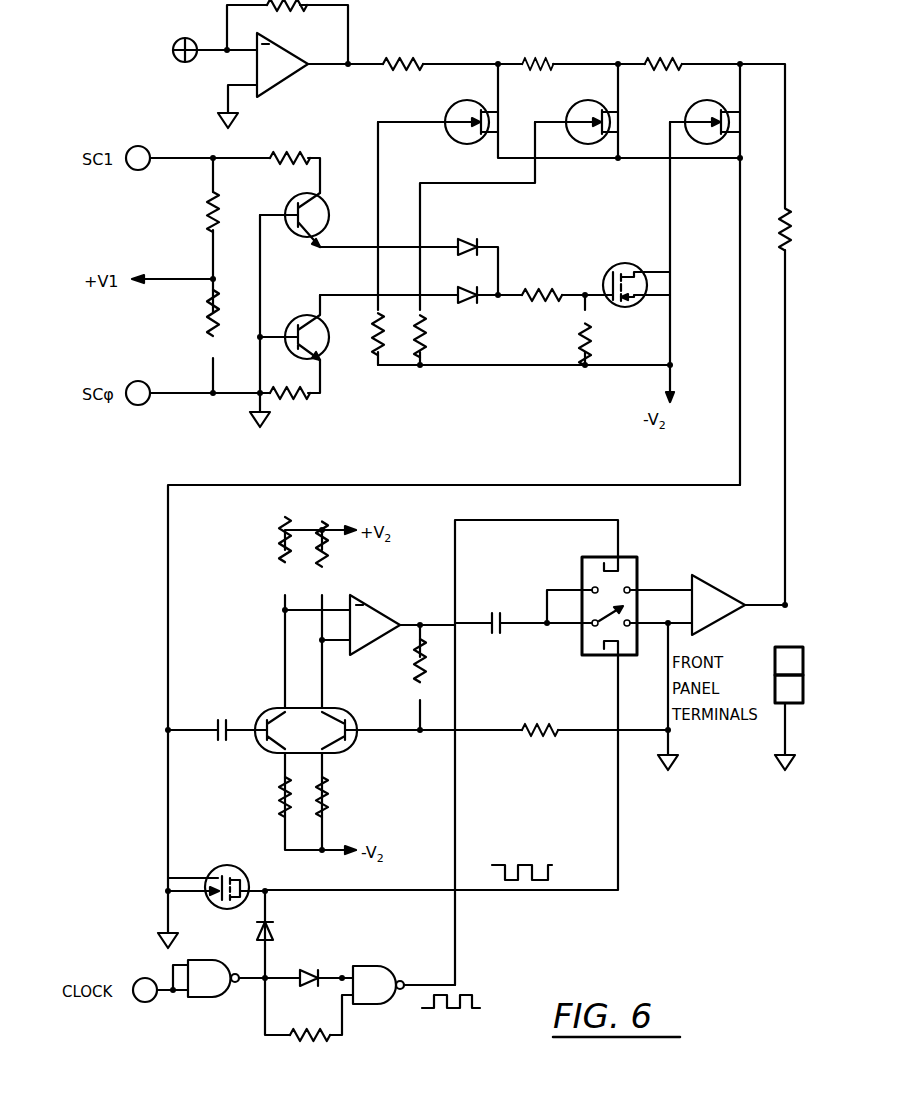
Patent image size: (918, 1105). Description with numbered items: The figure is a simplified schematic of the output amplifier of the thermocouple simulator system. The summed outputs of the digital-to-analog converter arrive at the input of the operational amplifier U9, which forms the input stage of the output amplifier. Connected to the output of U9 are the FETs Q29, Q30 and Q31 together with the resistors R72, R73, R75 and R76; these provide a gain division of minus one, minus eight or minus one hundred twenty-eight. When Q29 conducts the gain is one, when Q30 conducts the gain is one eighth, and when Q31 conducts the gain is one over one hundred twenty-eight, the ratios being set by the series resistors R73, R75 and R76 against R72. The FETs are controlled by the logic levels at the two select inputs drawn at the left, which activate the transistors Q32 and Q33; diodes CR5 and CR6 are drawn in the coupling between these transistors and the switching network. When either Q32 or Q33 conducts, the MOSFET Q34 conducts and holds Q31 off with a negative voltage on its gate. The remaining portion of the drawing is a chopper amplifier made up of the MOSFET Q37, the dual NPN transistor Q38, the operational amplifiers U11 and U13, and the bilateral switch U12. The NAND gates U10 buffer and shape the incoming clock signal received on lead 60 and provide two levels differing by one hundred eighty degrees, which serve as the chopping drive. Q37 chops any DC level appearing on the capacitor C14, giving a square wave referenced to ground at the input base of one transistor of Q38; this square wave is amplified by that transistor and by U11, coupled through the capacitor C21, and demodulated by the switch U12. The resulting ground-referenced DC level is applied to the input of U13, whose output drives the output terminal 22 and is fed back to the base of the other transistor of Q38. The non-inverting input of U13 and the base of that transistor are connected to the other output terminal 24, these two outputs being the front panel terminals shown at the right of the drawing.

The lead 60 is at (156, 982).
The output terminal 22 is at (811, 648).
The other output terminal 24 is at (818, 697).
The operational amplifier U9 is at (262, 64).
The gates U10 is at (321, 982).
The operational amplifier U11 is at (379, 623).
The bilateral switch U12 is at (602, 608).
The operational amplifier U13 is at (707, 603).
The FET Q29 is at (438, 122).
The FET Q30 is at (570, 122).
The FET Q31 is at (691, 122).
The transistor Q32 is at (309, 220).
The transistor Q33 is at (308, 330).
The MOSFET Q34 is at (634, 275).
The MOSFET Q37 is at (224, 887).
The dual NPN transistor Q38 is at (306, 730).
The resistor R72 is at (403, 54).
The resistor R73 is at (536, 54).
The resistor R75 is at (662, 54).
The resistor R76 is at (800, 229).
The diode CR5 is at (460, 257).
The diode CR6 is at (460, 306).
The capacitor C14 is at (211, 724).
The capacitor C21 is at (501, 616).